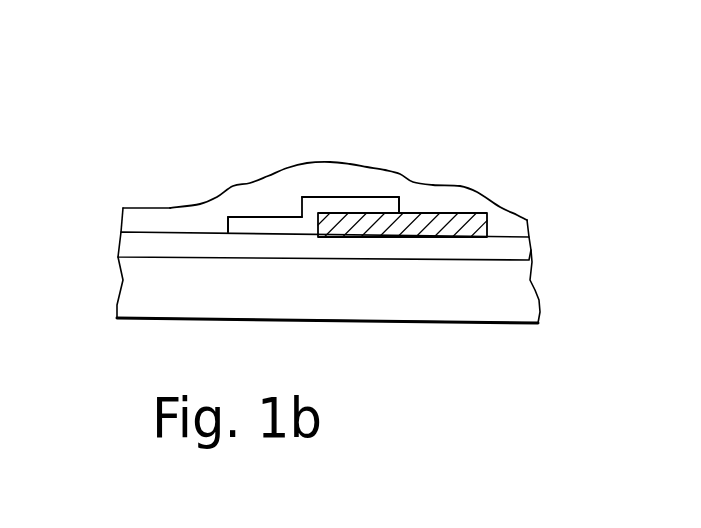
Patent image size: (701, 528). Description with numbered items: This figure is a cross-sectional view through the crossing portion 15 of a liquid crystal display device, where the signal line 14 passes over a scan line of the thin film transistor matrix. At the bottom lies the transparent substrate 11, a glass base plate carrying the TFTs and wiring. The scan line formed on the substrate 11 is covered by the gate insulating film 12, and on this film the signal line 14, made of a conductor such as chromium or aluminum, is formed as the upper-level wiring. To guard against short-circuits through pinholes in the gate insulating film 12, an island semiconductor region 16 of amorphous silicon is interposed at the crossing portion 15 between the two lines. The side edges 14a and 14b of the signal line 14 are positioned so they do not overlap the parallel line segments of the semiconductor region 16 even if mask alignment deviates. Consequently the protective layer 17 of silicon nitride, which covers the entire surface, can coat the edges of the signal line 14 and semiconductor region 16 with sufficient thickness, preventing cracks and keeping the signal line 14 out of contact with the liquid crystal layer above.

The transparent substrate 11 is at (488, 315).
The gate insulating film 12 is at (525, 257).
The signal line 14 is at (344, 168).
The side edge of signal line 14a is at (296, 213).
The side edge of signal line 14b is at (403, 191).
The crossing portion 15 is at (186, 88).
The island semiconductor region 16 is at (489, 232).
The protective layer 17 is at (158, 220).